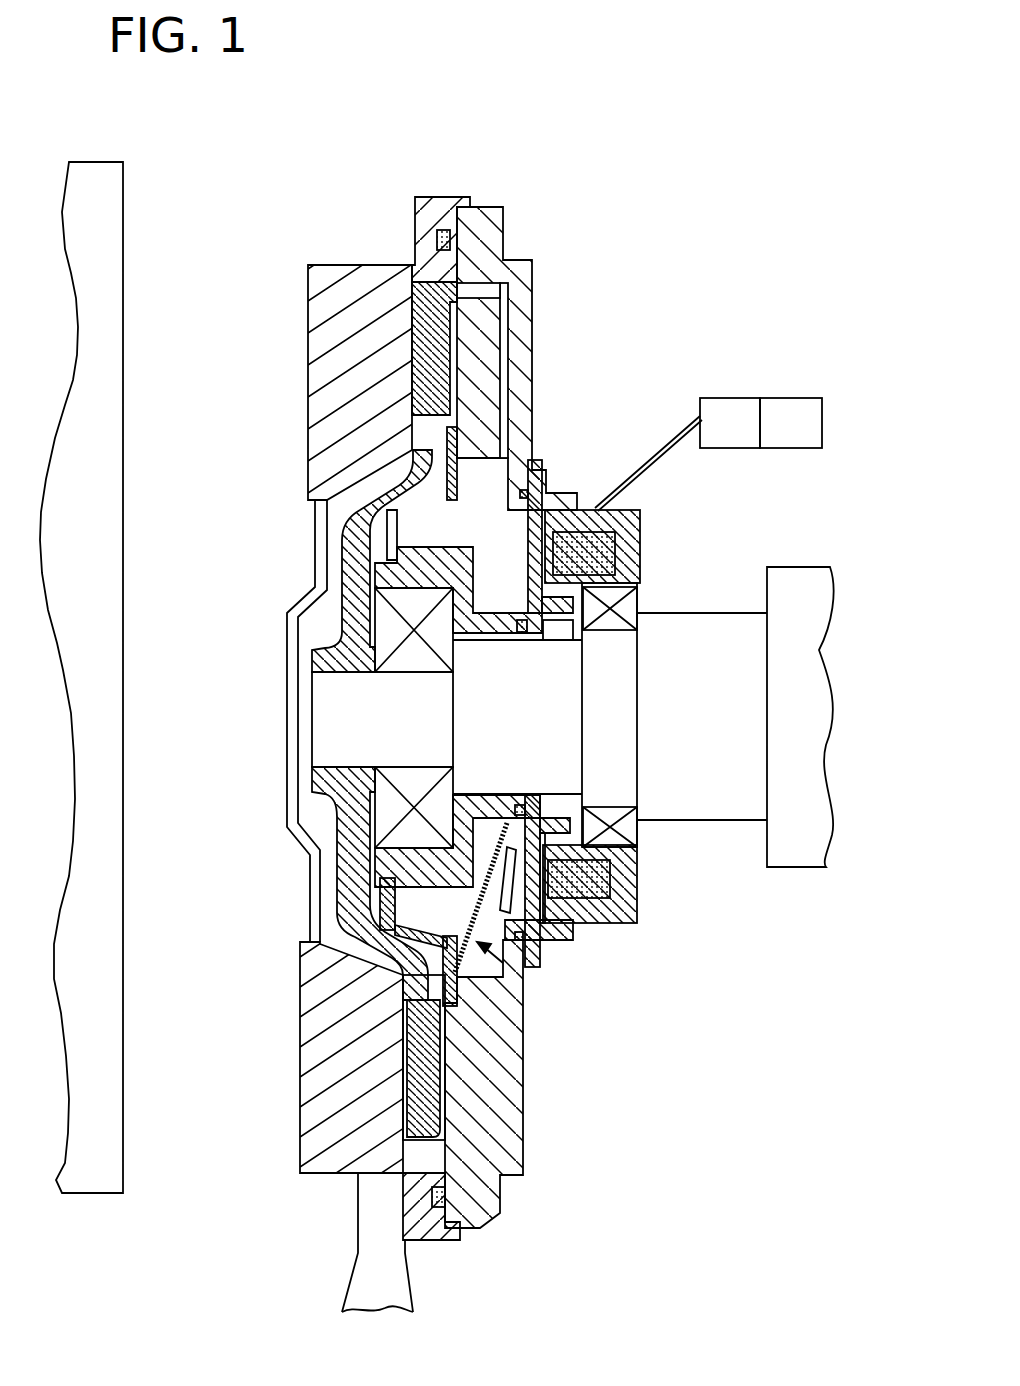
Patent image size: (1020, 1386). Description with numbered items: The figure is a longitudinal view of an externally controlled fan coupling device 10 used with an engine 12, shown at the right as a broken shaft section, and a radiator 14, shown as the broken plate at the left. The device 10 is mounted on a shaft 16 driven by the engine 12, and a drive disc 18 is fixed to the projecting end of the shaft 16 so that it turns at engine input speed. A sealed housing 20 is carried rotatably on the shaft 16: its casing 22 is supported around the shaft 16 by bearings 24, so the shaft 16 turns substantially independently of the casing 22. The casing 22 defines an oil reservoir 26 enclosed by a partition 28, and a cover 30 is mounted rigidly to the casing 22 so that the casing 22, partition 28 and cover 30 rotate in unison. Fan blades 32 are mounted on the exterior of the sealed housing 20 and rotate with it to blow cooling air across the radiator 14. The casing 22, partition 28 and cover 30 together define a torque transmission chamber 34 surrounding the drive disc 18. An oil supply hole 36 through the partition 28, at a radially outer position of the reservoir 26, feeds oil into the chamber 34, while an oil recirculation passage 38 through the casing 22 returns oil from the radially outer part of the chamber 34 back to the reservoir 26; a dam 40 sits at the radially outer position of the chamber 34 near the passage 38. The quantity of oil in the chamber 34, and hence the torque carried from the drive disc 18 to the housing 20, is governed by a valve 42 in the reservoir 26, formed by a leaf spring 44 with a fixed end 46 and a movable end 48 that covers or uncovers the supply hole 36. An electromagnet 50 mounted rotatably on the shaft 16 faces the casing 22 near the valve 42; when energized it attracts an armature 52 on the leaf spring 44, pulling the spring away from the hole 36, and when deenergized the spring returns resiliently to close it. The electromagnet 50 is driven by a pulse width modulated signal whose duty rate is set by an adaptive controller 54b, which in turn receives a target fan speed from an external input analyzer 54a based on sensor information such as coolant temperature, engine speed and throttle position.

The externally controlled fan coupling device 10 is at (562, 230).
The engine 12 is at (708, 717).
The radiator 14 is at (716, 842).
The shaft 16 is at (382, 719).
The drive disc 18 is at (428, 342).
The sealed housing 20 is at (416, 197).
The casing 22 is at (523, 330).
The bearings 24 is at (390, 624).
The oil reservoir 26 is at (423, 530).
The partition 28 is at (457, 482).
The cover 30 is at (317, 350).
The fan blades 32 is at (360, 1265).
The torque transmission chamber 34 is at (408, 1093).
The oil supply hole 36 is at (447, 963).
The oil recirculation passage 38 is at (508, 313).
The dam 40 is at (430, 340).
The valve 42 is at (525, 977).
The leaf spring 44 is at (470, 909).
The fixed end 46 is at (490, 793).
The movable end 48 is at (525, 980).
The electromagnet 50 is at (640, 538).
The armature 52 is at (536, 968).
The external input analyzer 54a is at (791, 423).
The adaptive controller 54b is at (677, 454).